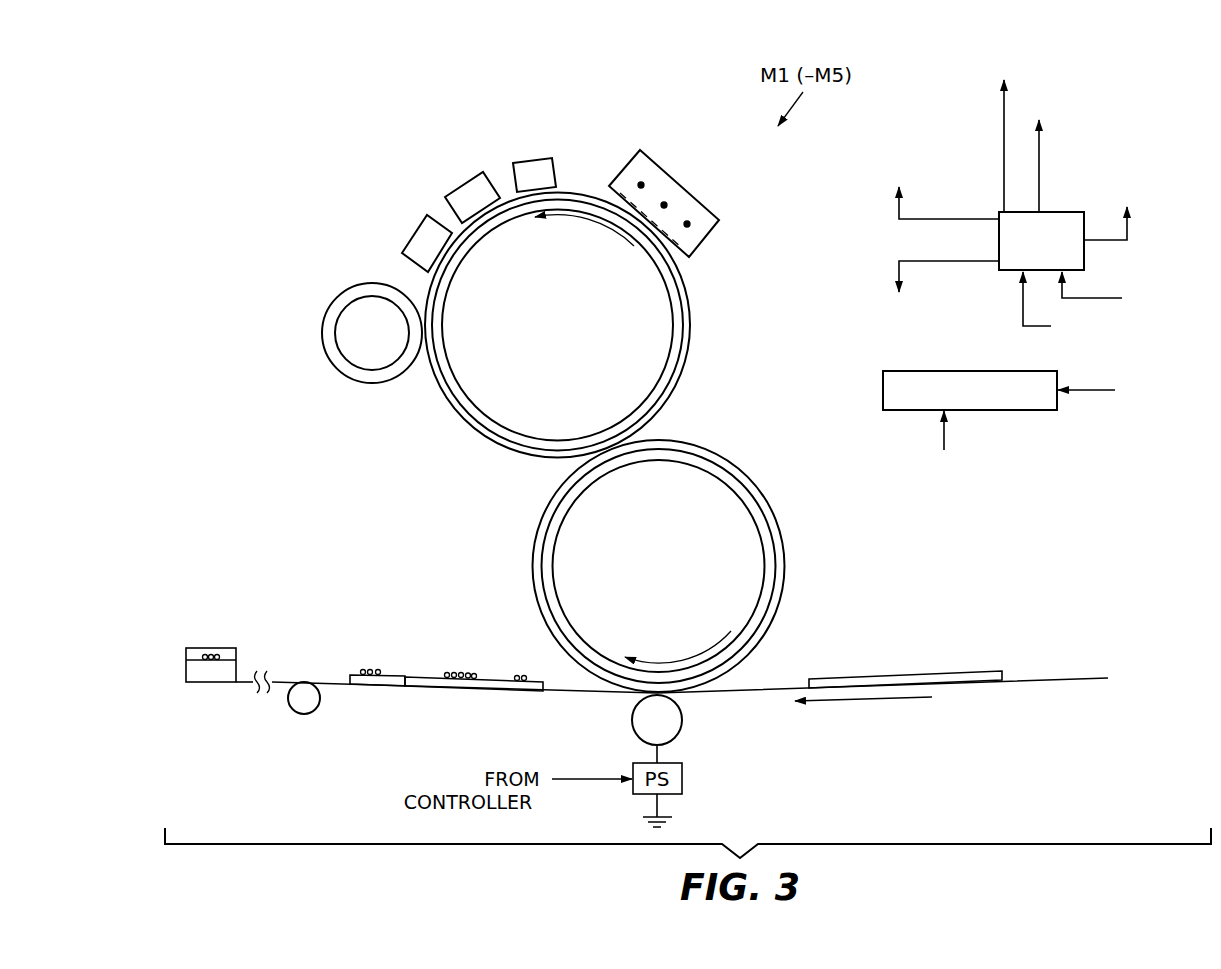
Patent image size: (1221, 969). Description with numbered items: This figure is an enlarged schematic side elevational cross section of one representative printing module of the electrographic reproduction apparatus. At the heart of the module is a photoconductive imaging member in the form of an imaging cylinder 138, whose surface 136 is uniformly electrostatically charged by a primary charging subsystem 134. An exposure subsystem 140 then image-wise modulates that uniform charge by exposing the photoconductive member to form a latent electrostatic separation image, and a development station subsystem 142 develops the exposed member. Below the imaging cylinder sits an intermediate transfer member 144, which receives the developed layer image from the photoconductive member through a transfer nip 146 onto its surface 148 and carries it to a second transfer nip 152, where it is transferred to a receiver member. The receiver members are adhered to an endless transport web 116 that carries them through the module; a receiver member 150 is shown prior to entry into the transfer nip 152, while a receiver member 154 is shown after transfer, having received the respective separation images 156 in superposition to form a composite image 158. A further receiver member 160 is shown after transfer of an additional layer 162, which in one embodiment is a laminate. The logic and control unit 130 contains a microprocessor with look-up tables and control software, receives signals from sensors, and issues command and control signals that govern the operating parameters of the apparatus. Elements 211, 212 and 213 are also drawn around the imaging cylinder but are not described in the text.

The endless transport web 116 is at (282, 681).
The logic and control unit (LCU) 130 is at (1084, 262).
The primary charging subsystem 134 is at (686, 175).
The surface of photoconductive imaging member 136 is at (670, 397).
The imaging cylinder 138 is at (699, 348).
The exposure subsystem 140 is at (467, 184).
The development station subsystem 142 is at (321, 347).
The intermediate transfer member 144 is at (818, 520).
The transfer nip 146 is at (592, 458).
The surface of intermediate transfer member 148 is at (786, 572).
The receiver member 150 is at (917, 682).
The transfer nip 152 is at (692, 688).
The receiver member 154 is at (405, 685).
The separation images 156 is at (473, 673).
The composite image 158 is at (375, 670).
The receiver member 160 is at (203, 680).
The additional layer 162 is at (198, 645).
The cleaning station 211 is at (531, 160).
The erase station 212 is at (415, 233).
The exposure location 213 is at (667, 230).